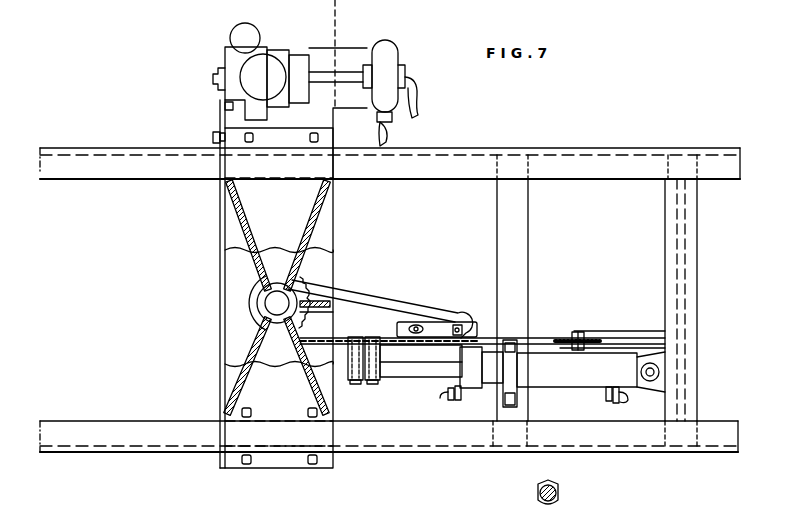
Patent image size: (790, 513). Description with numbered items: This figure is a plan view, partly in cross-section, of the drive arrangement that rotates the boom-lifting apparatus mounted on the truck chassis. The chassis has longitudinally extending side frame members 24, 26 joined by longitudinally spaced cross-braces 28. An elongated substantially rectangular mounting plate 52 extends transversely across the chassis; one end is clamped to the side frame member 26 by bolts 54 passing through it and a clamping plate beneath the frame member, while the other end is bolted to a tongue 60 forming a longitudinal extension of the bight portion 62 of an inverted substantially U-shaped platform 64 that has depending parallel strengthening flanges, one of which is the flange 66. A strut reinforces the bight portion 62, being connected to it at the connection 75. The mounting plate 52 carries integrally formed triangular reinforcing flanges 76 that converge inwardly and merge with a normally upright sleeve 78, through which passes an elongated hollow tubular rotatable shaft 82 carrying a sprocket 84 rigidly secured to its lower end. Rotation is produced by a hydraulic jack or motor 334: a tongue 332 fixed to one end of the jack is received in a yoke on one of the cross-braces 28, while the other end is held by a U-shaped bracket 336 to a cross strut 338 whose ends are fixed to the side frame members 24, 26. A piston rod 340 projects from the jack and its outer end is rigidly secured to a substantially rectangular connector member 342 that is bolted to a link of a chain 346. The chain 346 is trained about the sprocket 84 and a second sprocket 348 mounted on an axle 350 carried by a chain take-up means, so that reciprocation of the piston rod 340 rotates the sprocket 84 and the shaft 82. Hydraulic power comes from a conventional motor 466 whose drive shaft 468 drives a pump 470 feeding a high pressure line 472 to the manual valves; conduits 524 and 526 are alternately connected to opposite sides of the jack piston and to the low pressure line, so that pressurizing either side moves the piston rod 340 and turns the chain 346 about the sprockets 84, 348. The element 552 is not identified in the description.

The side frame member 24 is at (166, 147).
The side frame member 26 is at (146, 428).
The cross-brace 28 is at (665, 258).
The mounting plate 52 is at (330, 230).
The bolts 54 is at (240, 412).
The tongue 60 is at (348, 58).
The bight portion 62 is at (318, 55).
The platform 64 is at (285, 42).
The strengthening flange 66 is at (336, 22).
The strut connection 75 is at (220, 96).
The triangular reinforcing flanges 76 is at (298, 240).
The sleeve 78 is at (264, 312).
The rotatable shaft 82 is at (265, 300).
The sprocket 84 is at (300, 284).
The tongue 332 is at (424, 322).
The hydraulic jack or motor 334 is at (560, 388).
The U-shaped bracket 336 is at (509, 390).
The cross strut 338 is at (520, 300).
The piston rod 340 is at (408, 378).
The connector member 342 is at (370, 336).
The chain 346 is at (412, 323).
The sprocket 348 is at (456, 324).
The axle 350 is at (470, 336).
The motor 466 is at (224, 58).
The drive shaft 468 is at (365, 123).
The pump 470 is at (388, 56).
The high pressure line 472 is at (392, 138).
The conduit 524 is at (446, 396).
The conduit 526 is at (612, 402).
The hose 552 is at (424, 100).